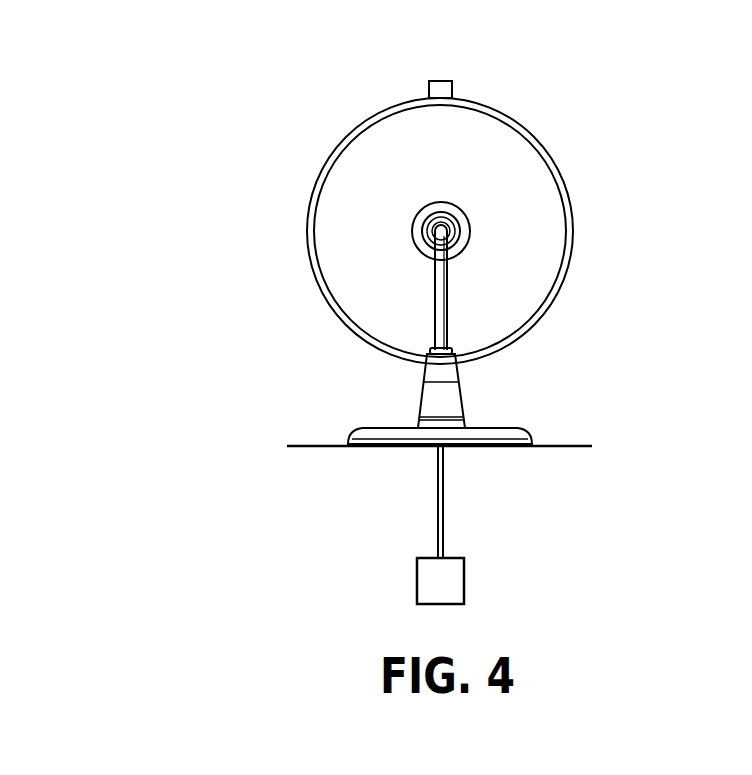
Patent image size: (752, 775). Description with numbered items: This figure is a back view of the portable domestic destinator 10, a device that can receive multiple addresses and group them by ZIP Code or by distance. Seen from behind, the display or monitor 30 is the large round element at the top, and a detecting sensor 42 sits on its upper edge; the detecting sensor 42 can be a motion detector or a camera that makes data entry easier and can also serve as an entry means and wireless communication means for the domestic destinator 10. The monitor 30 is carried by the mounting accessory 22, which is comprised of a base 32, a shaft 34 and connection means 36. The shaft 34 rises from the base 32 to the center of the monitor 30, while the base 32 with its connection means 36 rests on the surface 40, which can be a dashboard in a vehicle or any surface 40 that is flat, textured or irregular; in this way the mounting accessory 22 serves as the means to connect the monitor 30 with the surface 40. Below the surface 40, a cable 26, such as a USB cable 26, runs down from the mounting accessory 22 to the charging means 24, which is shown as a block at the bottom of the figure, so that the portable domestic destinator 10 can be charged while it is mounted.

The domestic destinator 10 is at (85, 115).
The mounting accessory 22 is at (283, 357).
The charging means 24 is at (425, 582).
The cable 26 is at (441, 508).
The monitor 30 is at (543, 147).
The base 32 is at (476, 422).
The shaft 34 is at (440, 308).
The connection means 36 is at (402, 443).
The surface 40 is at (556, 446).
The detecting sensor 42 is at (443, 80).